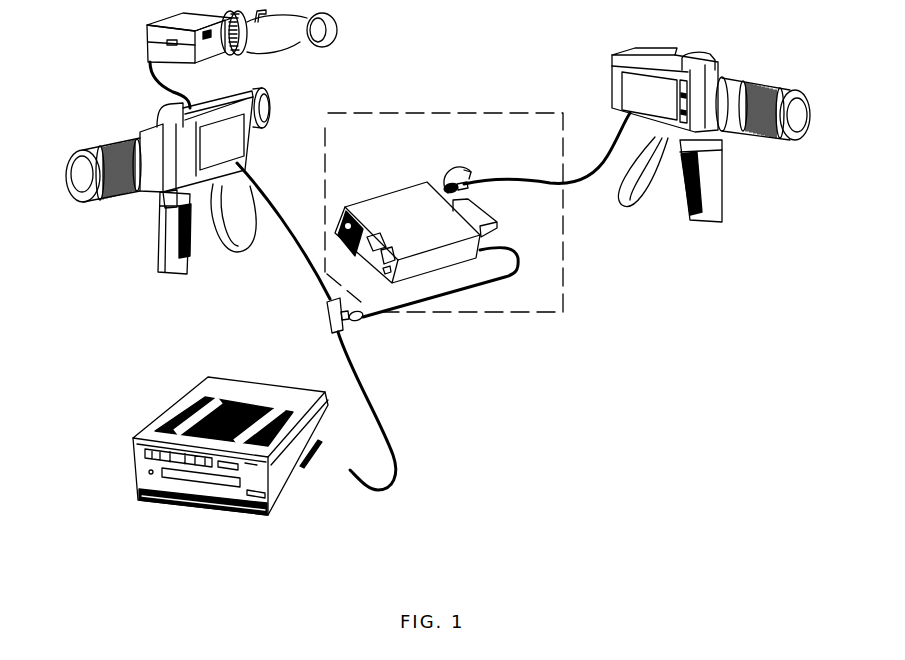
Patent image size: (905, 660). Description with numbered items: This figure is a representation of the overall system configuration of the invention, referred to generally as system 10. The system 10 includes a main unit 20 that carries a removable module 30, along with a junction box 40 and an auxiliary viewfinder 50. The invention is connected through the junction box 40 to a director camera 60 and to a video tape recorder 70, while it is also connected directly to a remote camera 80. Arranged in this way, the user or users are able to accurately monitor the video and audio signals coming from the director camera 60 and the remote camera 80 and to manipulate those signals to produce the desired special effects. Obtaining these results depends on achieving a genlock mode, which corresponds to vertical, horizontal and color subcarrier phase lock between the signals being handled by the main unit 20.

The system 10 is at (542, 313).
The main unit 20 is at (398, 218).
The removable module 30 is at (477, 213).
The junction box 40 is at (328, 315).
The auxiliary viewfinder 50 is at (307, 40).
The director camera 60 is at (140, 143).
The video tape recorder 70 is at (207, 390).
The remote camera 80 is at (733, 90).